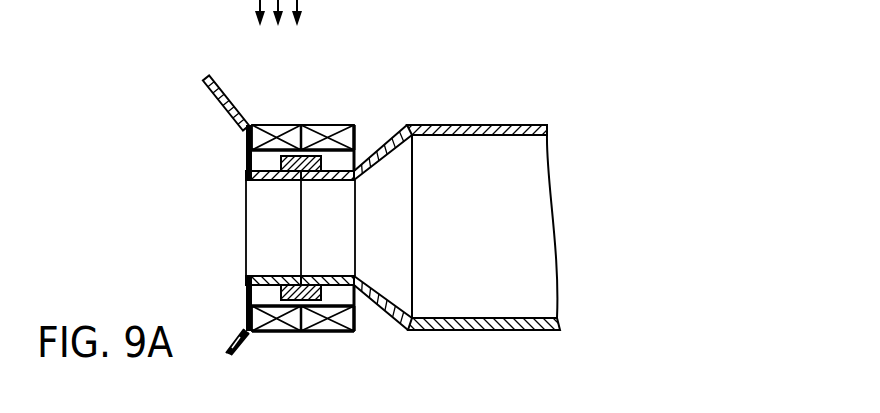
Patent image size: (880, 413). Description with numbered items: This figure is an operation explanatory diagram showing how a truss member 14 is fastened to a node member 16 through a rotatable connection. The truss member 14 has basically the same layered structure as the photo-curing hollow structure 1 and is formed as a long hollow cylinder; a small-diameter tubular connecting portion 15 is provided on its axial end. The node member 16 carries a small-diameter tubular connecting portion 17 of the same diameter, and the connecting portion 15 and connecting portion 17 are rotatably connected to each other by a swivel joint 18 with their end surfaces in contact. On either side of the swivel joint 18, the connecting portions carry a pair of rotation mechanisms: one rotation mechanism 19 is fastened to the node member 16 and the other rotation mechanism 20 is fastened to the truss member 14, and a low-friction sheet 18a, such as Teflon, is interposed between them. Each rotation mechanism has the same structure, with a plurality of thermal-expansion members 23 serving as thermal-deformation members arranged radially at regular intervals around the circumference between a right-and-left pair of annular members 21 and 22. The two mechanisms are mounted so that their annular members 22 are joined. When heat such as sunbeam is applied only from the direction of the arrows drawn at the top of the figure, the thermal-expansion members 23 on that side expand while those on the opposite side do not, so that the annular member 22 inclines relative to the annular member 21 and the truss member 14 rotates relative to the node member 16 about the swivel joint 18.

The photo-curing hollow structure 1 is at (468, 110).
The truss member 14 is at (533, 125).
The connecting portion 15 is at (324, 182).
The node member 16 is at (216, 82).
The connecting portion 17 is at (270, 182).
The swivel joint 18 is at (338, 333).
The sheet 18a is at (302, 331).
The rotation mechanism 19 is at (272, 125).
The rotation mechanism 20 is at (346, 125).
The annular member 21 is at (250, 141).
The annular member 22 is at (304, 127).
The thermal-expansion member 23 is at (252, 150).